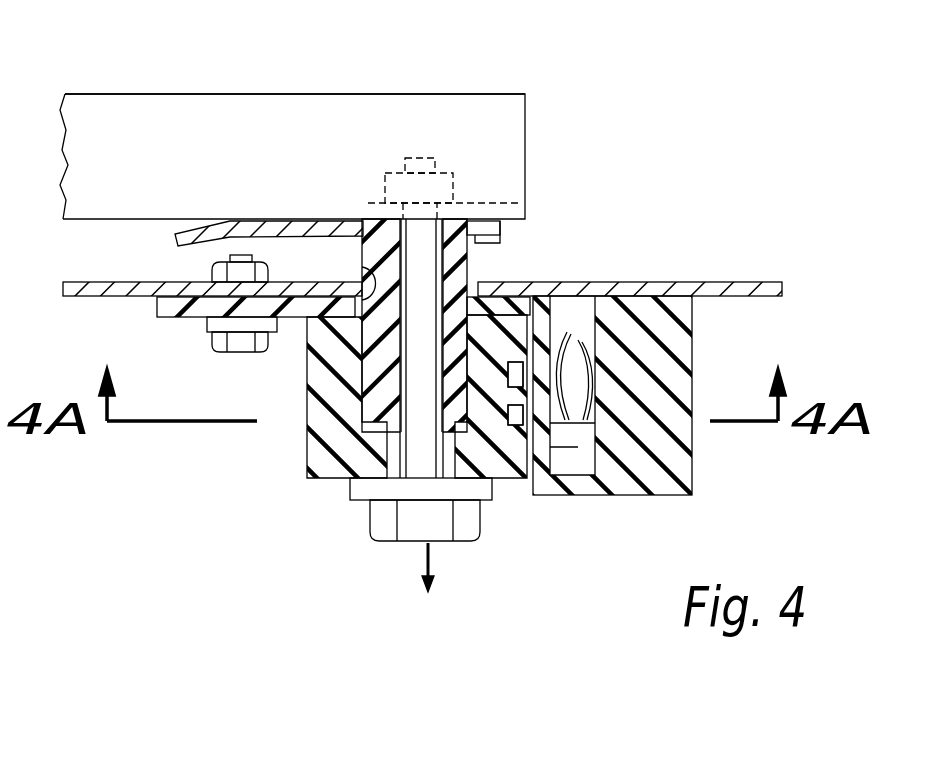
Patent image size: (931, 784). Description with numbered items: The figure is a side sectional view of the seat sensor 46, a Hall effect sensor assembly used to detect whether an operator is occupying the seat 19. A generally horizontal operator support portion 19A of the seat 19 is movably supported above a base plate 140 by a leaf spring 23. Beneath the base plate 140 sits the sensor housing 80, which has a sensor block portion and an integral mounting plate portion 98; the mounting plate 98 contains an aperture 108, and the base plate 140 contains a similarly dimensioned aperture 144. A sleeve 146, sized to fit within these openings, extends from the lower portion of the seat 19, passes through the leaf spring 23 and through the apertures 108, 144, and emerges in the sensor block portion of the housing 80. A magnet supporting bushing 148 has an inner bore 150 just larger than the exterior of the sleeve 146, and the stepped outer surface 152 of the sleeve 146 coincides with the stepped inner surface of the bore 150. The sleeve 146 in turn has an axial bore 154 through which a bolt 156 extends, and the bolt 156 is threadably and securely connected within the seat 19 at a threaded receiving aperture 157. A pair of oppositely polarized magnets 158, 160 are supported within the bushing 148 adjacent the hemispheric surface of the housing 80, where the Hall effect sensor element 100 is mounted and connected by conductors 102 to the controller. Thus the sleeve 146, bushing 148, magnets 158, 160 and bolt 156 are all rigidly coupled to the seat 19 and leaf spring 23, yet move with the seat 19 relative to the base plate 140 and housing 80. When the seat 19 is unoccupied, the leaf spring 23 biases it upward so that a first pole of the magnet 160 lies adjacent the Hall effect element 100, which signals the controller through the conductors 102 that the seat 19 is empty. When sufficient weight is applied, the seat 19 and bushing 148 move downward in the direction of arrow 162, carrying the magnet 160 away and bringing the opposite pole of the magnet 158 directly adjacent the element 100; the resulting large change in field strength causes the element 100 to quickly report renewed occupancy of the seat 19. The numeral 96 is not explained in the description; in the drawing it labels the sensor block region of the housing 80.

The seat 19 is at (537, 104).
The operator support portion 19A is at (224, 108).
The threaded receiving aperture 157 is at (455, 184).
The leaf spring 23 is at (484, 232).
The base plate 140 is at (680, 281).
The mounting plate portion 98 is at (162, 318).
The aperture 144 is at (362, 268).
The magnet supporting bushing 148 is at (315, 452).
The sleeve 146 is at (385, 385).
The aperture 108 is at (467, 300).
The magnet 158 is at (558, 294).
The inner bore 150 is at (392, 398).
The bolt 156 is at (416, 468).
The stepped outer surface 152 is at (357, 482).
The axial bore 154 is at (425, 482).
The arrow 162 is at (433, 556).
The magnet 160 is at (515, 430).
The block 96 is at (663, 486).
The Hall effect sensor element 100 is at (568, 448).
The conductors 102 is at (580, 345).
The sensor housing 80 is at (708, 312).
The seat sensor 46 is at (762, 206).